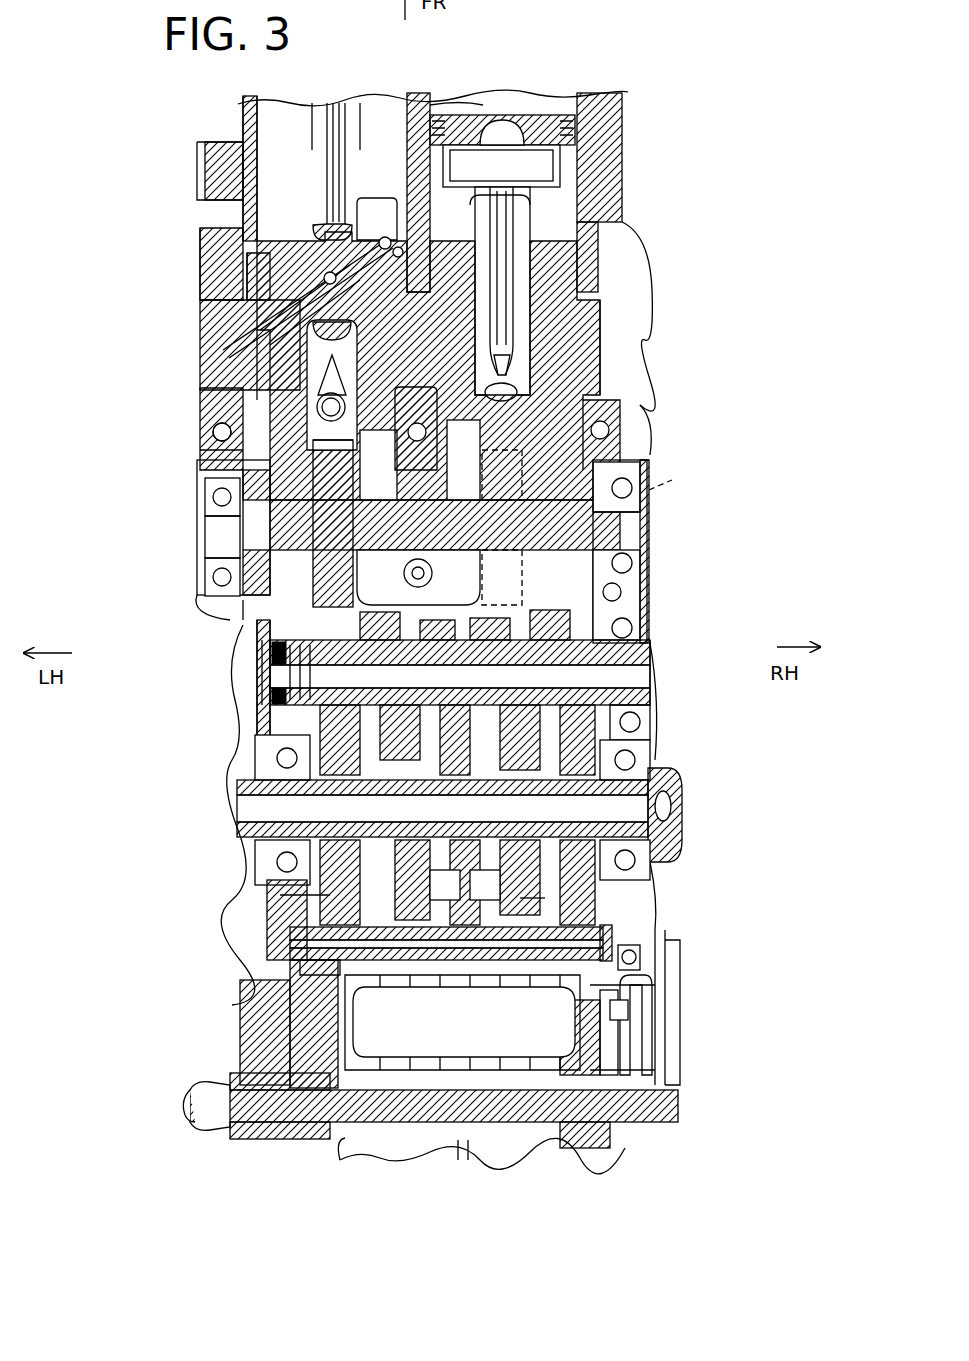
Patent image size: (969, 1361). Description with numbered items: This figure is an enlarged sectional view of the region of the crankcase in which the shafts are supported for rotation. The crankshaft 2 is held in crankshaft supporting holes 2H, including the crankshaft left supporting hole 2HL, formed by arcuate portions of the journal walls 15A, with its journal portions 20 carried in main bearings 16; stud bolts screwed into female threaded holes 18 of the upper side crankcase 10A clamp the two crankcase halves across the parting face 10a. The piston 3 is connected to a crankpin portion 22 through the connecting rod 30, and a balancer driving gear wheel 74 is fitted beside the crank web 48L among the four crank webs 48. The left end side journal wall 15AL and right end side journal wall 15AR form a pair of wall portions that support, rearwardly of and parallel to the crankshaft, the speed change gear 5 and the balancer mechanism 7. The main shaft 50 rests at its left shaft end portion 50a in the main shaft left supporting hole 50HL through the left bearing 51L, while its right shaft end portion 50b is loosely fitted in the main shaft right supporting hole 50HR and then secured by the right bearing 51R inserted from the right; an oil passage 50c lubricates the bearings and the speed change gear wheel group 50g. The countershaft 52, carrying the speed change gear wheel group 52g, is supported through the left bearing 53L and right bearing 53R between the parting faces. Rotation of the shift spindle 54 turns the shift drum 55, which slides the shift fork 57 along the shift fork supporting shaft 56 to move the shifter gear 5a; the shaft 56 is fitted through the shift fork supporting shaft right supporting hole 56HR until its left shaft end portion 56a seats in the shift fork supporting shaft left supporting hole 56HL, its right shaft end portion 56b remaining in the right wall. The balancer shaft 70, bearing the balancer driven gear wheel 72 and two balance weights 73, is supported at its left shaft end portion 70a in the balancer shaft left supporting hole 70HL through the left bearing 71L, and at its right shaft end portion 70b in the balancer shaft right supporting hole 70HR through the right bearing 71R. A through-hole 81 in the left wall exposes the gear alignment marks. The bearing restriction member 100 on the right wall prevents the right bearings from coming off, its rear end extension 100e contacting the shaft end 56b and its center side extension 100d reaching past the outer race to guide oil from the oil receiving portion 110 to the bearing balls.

The crankshaft 2 is at (580, 348).
The crankshaft supporting hole 2H is at (600, 330).
The crankshaft left supporting hole 2HL is at (275, 345).
The piston 3 is at (540, 115).
The speed change gear 5 is at (650, 890).
The gear 5a is at (300, 880).
The balancer mechanism 7 is at (300, 585).
The upper side crankcase 10A is at (633, 258).
The parting face 10a is at (483, 105).
The journal wall 15A is at (455, 398).
The left end side journal wall 15AL is at (295, 400).
The right end side journal wall 15AR is at (625, 400).
The main bearing 16 is at (238, 332).
The female threaded hole 18 is at (212, 431).
The journal portion 20 is at (240, 365).
The crankpin portion 22 is at (296, 262).
The connecting rod 30 is at (330, 150).
The crank web 48 is at (460, 210).
The crank web 48L is at (318, 243).
The main shaft 50 is at (345, 662).
The left shaft end portion 50a is at (300, 712).
The right shaft end portion 50b is at (650, 712).
The oil passage 50c is at (650, 682).
The speed change gear wheel group 50g is at (458, 604).
The main shaft left supporting hole 50HL is at (300, 660).
The main shaft right supporting hole 50HR is at (652, 622).
The left bearing 51L is at (290, 740).
The right bearing 51R is at (648, 740).
The countershaft 52 is at (360, 795).
The speed change gear wheel group 52g is at (420, 888).
The left bearing 53L is at (300, 860).
The right bearing 53R is at (655, 765).
The shift spindle 54 is at (215, 1105).
The shift drum 55 is at (345, 1062).
The shift fork supporting shaft 56 is at (330, 940).
The left shaft end portion 56a is at (320, 965).
The right shaft end portion 56b is at (640, 946).
The shift fork supporting shaft left supporting hole 56HL is at (290, 935).
The shift fork supporting shaft right supporting hole 56HR is at (640, 940).
The shift fork 57 is at (290, 898).
The balancer shaft 70 is at (575, 525).
The left shaft end portion 70a is at (225, 555).
The right shaft end portion 70b is at (625, 510).
The balancer shaft left supporting hole 70HL is at (210, 500).
The balancer shaft right supporting hole 70HR is at (648, 562).
The left bearing 71L is at (228, 512).
The right bearing 71R is at (615, 474).
The balancer driven gear wheel 72 is at (248, 470).
The balance weight 73 is at (312, 482).
The balancer driving gear wheel 74 is at (317, 445).
The through-hole 81 is at (205, 452).
The bearing restriction member 100 is at (650, 462).
The center side extension 100d is at (650, 488).
The rear end extension 100e is at (545, 898).
The oil receiving portion 110 is at (672, 480).